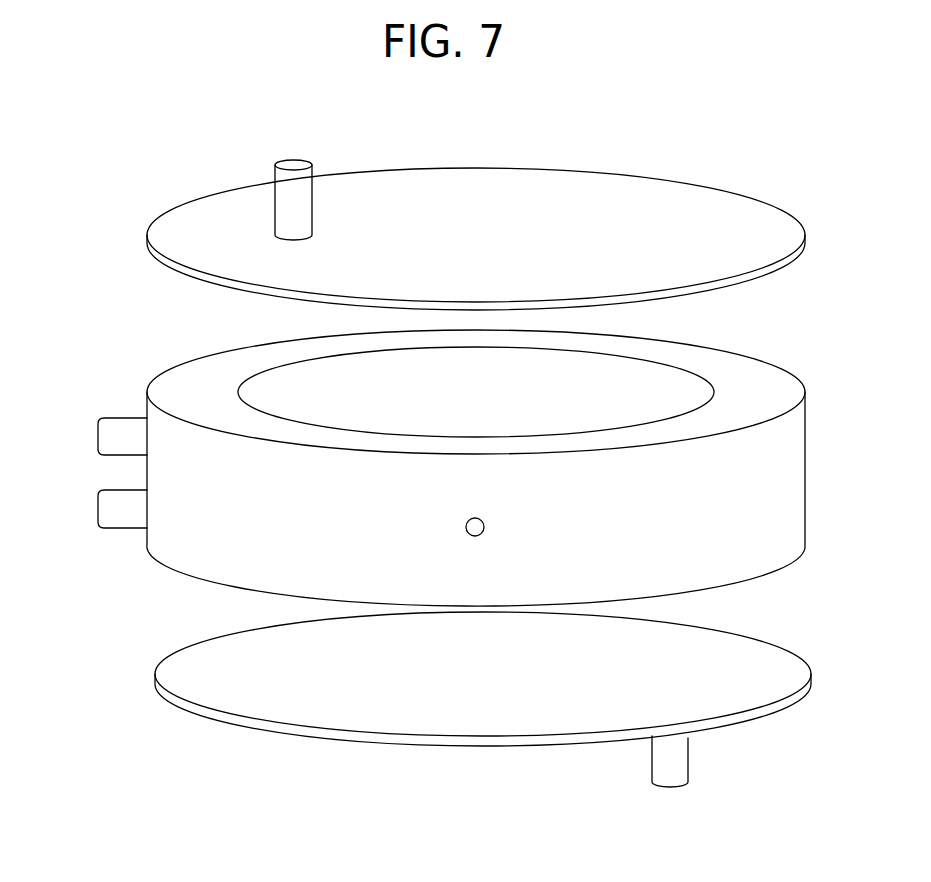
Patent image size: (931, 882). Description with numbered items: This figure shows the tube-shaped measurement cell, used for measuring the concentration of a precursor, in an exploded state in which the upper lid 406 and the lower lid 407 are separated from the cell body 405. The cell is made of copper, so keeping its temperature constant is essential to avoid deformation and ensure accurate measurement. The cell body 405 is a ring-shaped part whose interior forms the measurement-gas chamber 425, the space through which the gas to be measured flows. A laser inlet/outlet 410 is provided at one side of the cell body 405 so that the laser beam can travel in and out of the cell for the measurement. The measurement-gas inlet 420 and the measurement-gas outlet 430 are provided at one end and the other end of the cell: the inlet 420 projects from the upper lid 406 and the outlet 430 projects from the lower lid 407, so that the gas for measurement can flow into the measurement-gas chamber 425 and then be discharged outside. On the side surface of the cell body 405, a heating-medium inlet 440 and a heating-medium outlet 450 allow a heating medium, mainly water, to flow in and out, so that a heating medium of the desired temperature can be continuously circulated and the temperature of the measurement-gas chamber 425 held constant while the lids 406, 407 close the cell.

The housing ring body 405 is at (476, 468).
The upper lid 406 is at (767, 242).
The lower lid 407 is at (747, 658).
The laser inlet/outlet 410 is at (489, 522).
The measurement-gas inlet 420 is at (263, 200).
The measurement-gas chamber 425 is at (476, 392).
The measurement-gas outlet 430 is at (701, 761).
The heating-medium inlet 440 is at (85, 512).
The heating-medium outlet 450 is at (88, 432).